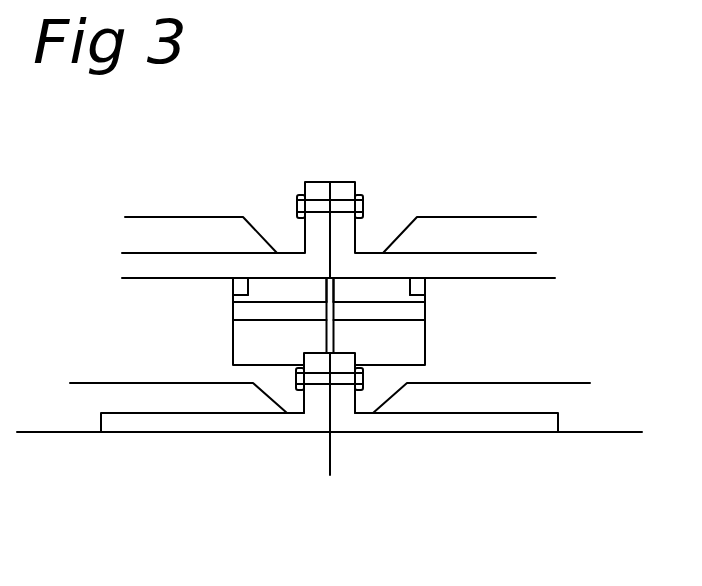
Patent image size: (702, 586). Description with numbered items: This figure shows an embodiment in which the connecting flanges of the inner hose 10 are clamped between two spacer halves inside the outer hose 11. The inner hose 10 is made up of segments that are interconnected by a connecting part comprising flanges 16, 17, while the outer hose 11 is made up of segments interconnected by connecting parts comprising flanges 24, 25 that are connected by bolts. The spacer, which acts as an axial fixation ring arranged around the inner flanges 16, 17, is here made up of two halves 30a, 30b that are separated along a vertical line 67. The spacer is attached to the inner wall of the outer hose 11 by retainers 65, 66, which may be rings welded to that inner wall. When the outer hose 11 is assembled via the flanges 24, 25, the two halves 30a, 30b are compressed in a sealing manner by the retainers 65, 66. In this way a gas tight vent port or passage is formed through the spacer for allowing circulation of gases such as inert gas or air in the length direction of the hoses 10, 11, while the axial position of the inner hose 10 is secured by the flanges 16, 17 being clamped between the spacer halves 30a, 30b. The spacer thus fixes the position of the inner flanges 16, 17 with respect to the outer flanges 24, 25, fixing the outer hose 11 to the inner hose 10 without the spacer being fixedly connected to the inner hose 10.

The inner hose 10 is at (538, 397).
The outer hose 11 is at (517, 230).
The flange 16 is at (342, 395).
The flange 17 is at (318, 402).
The flange 24 is at (342, 188).
The flange 25 is at (317, 190).
The spacer half 30a is at (262, 338).
The spacer half 30b is at (412, 343).
The retainer 65 is at (425, 285).
The retainer 66 is at (240, 287).
The vertical line 67 is at (328, 297).